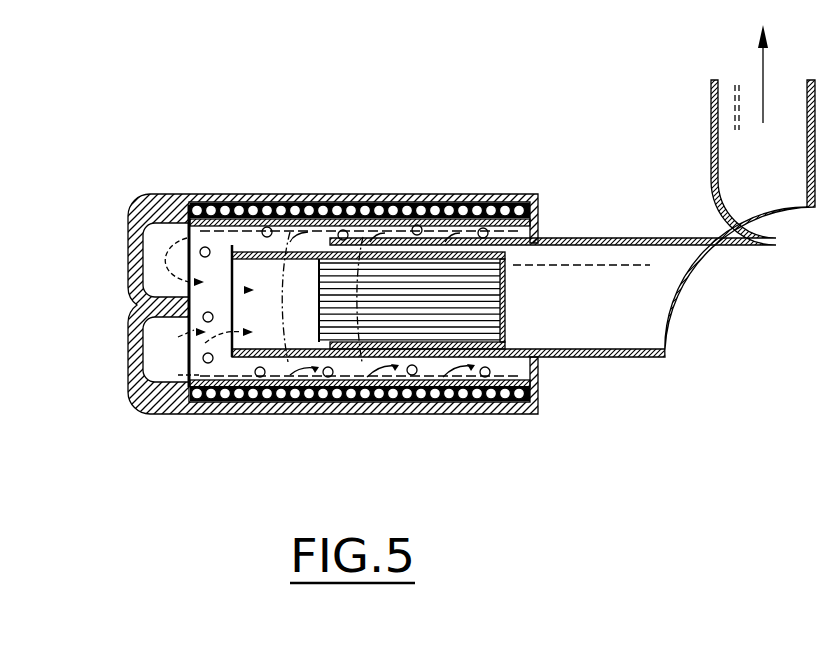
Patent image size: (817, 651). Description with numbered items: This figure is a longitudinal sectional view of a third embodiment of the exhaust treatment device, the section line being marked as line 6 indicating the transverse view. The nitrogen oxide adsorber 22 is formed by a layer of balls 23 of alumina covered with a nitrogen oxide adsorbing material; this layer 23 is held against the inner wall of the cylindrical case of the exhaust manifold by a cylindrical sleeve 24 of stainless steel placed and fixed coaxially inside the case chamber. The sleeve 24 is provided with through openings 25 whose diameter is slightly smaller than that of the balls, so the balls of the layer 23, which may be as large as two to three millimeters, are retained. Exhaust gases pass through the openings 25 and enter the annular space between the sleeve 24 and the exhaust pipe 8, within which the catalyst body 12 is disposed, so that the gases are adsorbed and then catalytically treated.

The exhaust pipe 8 is at (597, 358).
The catalyst body 12 is at (503, 313).
The nitrogen oxide adsorber 22 is at (482, 195).
The layer of balls 23 is at (237, 401).
The cylindrical sleeve 24 is at (213, 197).
The through openings 25 is at (333, 194).
The section line of FIG. 6 is at (381, 170).